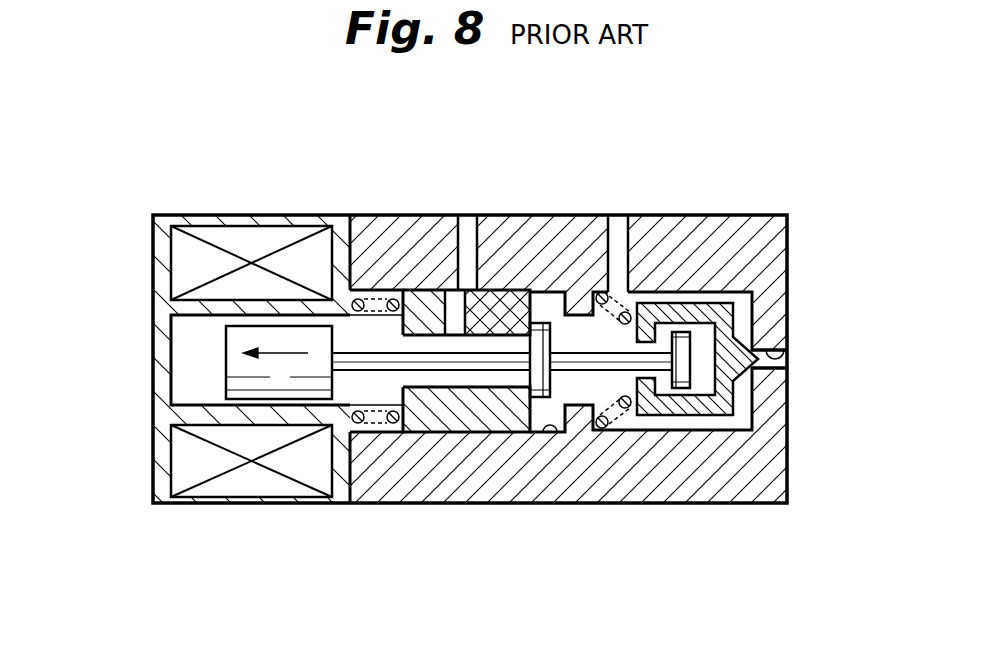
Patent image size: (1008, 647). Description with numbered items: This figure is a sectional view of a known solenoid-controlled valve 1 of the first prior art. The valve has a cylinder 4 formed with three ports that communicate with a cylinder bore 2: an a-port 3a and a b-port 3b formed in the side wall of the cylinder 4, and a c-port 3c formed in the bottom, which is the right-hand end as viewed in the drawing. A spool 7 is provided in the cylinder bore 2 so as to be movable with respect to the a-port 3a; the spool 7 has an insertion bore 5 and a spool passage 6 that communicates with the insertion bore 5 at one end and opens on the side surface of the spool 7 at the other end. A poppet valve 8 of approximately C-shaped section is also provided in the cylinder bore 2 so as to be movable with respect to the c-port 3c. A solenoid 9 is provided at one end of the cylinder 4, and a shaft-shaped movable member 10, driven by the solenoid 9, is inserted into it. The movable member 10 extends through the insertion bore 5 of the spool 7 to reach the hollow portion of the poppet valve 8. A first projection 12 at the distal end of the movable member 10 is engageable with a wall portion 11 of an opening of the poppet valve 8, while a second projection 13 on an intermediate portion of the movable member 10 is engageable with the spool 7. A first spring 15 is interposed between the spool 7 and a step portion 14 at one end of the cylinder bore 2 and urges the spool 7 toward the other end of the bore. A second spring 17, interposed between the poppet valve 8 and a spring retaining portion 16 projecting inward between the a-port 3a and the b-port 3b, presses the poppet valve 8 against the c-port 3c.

The solenoid-controlled valve 1 is at (786, 189).
The cylinder bore 2 is at (550, 432).
The a-port 3a is at (470, 240).
The b-port 3b is at (618, 240).
The c-port 3c is at (787, 362).
The cylinder 4 is at (718, 245).
The insertion bore 5 is at (510, 337).
The spool passage 6 is at (465, 312).
The spool 7 is at (485, 422).
The poppet valve 8 is at (718, 416).
The solenoid 9 is at (247, 473).
The movable member 10 is at (243, 383).
The wall portion 11 is at (650, 416).
The first projection 12 is at (683, 390).
The second projection 13 is at (532, 398).
The step portion 14 is at (363, 288).
The first spring 15 is at (385, 432).
The spring retaining portion 16 is at (573, 413).
The second spring 17 is at (600, 422).